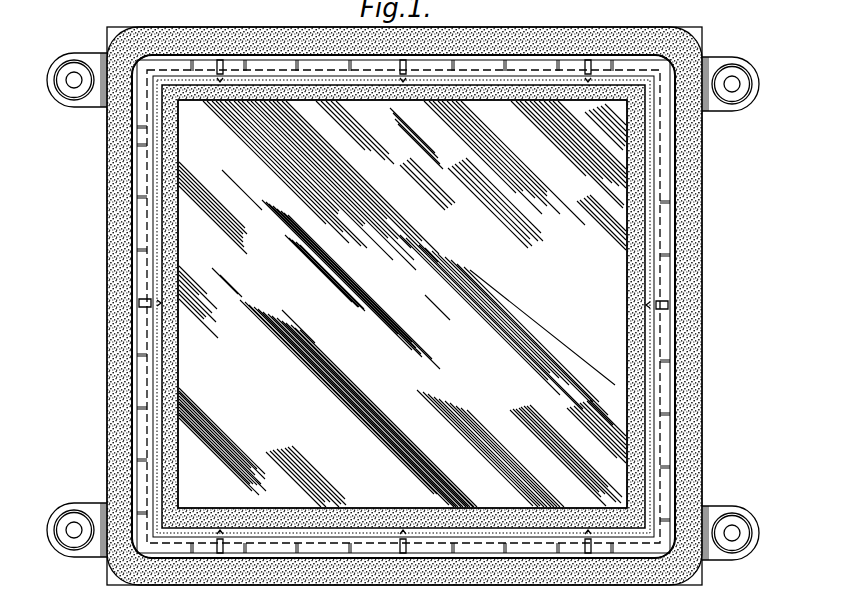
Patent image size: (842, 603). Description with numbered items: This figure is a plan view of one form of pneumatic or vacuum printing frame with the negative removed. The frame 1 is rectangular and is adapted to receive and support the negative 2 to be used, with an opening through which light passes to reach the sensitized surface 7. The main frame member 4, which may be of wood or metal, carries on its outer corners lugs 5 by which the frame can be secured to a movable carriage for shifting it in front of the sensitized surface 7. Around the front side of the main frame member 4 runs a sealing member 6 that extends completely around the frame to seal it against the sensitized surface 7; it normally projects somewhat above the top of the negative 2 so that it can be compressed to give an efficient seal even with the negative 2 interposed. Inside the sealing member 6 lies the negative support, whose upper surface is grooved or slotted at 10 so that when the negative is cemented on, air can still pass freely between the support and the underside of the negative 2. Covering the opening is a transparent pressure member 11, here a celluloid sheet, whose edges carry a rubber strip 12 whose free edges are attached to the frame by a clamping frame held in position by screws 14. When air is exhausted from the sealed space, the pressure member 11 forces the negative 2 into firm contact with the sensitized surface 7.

The frame 1 is at (703, 262).
The negative 2 is at (746, 315).
The main frame member 4 is at (110, 570).
The lugs 5 is at (717, 107).
The sealing member 6 is at (113, 380).
The sensitized surface 7 is at (143, 327).
The grooves 10 is at (143, 413).
The pressure member 11 is at (402, 304).
The rubber strip 12 is at (170, 220).
The screws 14 is at (147, 303).